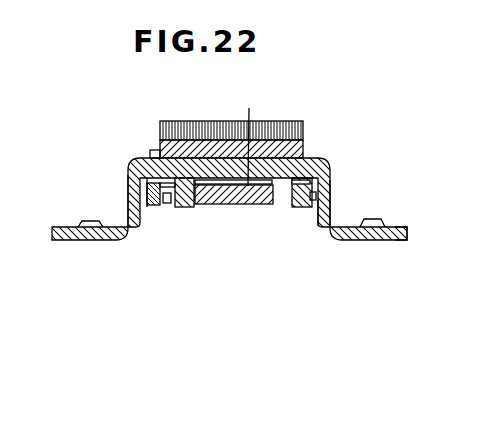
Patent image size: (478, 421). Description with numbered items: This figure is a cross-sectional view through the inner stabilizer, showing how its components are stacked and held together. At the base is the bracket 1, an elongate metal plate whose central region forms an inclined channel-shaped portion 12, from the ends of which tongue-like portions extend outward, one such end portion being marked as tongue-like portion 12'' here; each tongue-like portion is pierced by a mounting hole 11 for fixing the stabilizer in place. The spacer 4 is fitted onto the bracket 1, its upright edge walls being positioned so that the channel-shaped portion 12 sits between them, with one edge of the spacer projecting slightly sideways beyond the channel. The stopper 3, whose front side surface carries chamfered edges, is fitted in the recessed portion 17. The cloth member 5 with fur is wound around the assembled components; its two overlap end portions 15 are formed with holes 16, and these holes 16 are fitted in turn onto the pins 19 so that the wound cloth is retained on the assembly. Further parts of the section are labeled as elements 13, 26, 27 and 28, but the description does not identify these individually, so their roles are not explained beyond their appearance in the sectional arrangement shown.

The bracket 1 is at (336, 196).
The stopper 3 is at (153, 178).
The spacer 4 is at (191, 144).
The cloth member with fur 5 is at (305, 133).
The mounting hole 11 is at (378, 221).
The channel-shaped portion 12 is at (229, 193).
The mounting flange 12'' is at (425, 220).
The leg portion 13 is at (201, 208).
The overlap end portion 15 is at (240, 206).
The hole 16 is at (160, 207).
The recessed portion 17 is at (253, 138).
The pin 19 is at (182, 208).
The side wall 26 is at (322, 207).
The side wall 27 is at (130, 184).
The projection 28 is at (150, 213).